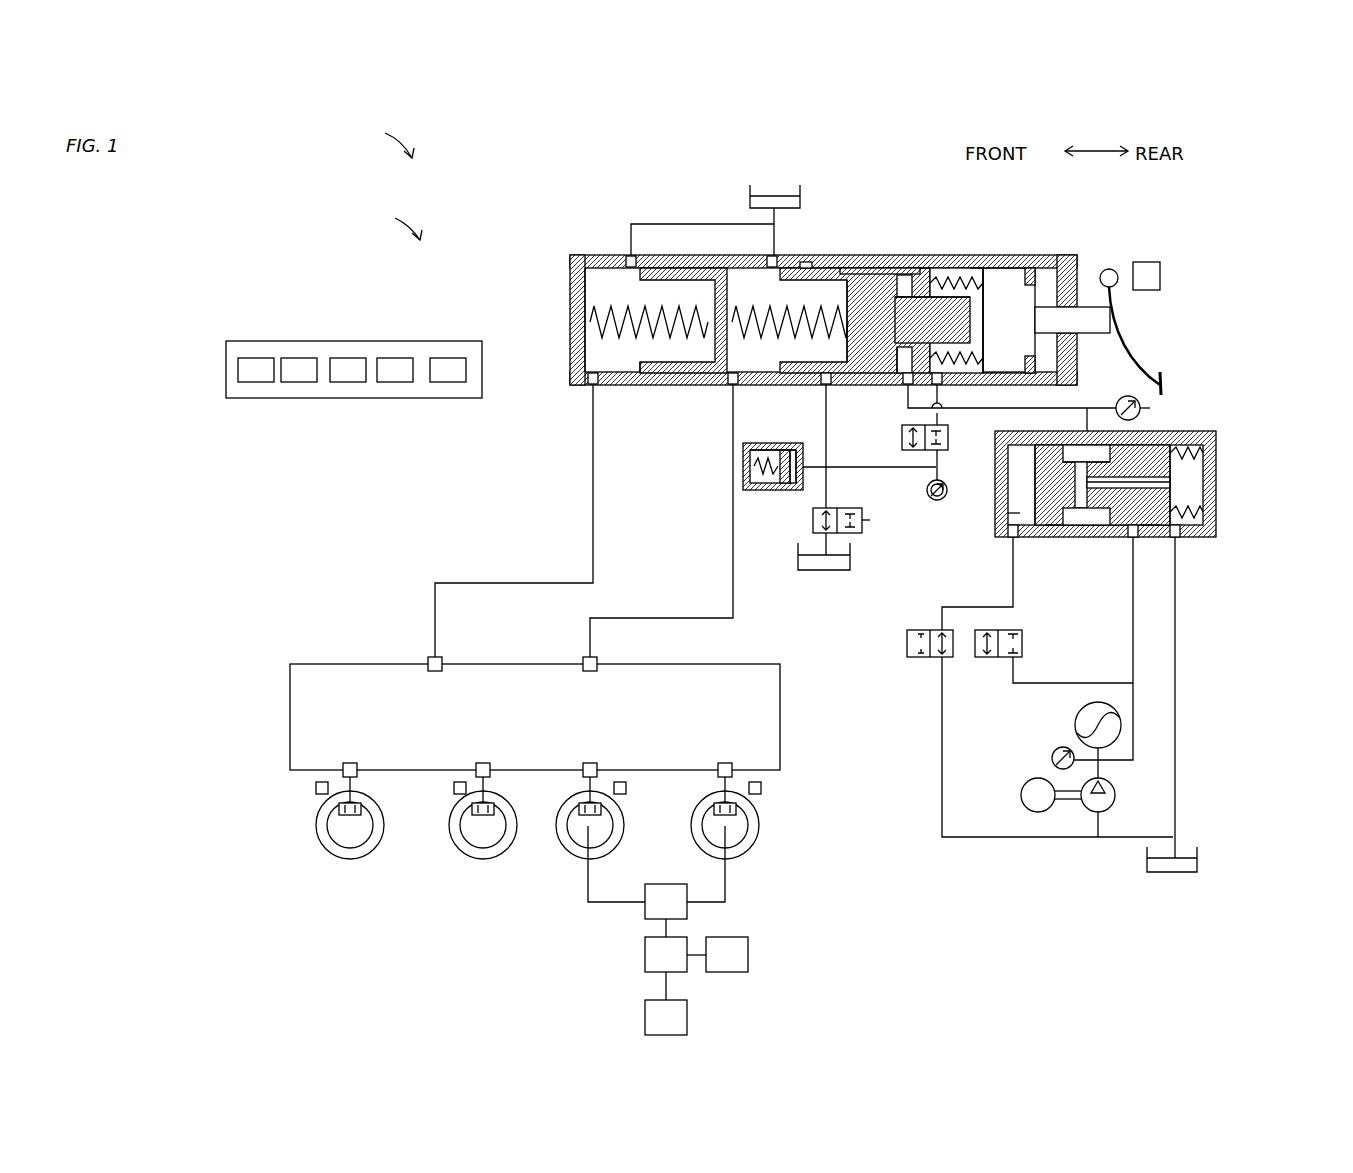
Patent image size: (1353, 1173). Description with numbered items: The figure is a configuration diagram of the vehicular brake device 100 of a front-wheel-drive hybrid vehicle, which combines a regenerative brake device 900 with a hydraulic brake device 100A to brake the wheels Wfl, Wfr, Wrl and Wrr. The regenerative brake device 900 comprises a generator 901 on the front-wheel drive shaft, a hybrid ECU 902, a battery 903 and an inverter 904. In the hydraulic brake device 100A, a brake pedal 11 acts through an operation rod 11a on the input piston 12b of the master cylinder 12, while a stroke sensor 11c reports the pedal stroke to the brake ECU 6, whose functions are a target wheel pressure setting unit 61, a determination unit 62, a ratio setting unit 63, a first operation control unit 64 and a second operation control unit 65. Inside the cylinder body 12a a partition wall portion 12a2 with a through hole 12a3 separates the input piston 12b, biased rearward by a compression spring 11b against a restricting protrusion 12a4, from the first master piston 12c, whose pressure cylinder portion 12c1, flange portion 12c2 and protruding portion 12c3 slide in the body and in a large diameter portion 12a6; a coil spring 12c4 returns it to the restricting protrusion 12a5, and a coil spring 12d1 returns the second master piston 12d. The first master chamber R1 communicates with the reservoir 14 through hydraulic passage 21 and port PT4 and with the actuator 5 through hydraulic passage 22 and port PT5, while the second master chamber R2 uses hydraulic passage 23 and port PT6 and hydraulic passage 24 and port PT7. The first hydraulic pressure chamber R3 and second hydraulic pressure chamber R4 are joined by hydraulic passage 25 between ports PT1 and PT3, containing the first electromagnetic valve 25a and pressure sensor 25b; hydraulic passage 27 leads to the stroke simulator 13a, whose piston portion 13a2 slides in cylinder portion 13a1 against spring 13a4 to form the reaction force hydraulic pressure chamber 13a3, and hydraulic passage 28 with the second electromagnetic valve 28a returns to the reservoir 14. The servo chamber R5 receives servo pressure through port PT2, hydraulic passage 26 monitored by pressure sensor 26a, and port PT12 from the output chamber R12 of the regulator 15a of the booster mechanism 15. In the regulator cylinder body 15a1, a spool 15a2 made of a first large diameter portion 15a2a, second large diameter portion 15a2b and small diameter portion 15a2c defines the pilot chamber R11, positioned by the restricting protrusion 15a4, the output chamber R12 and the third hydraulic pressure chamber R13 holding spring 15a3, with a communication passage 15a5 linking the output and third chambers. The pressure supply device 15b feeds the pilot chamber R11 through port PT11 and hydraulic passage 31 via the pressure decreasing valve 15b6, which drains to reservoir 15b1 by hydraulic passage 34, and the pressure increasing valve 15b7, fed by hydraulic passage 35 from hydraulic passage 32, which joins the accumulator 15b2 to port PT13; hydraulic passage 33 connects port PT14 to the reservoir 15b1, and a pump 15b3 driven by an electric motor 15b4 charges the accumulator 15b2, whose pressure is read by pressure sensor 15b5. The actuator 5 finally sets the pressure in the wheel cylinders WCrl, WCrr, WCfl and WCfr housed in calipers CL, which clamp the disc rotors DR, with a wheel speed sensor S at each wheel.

The vehicular brake device 100 is at (364, 140).
The hydraulic brake device 100A is at (370, 225).
The brake ECU 6 is at (305, 341).
The target wheel pressure setting unit 61 is at (246, 378).
The determination unit 62 is at (303, 378).
The ratio setting unit 63 is at (346, 378).
The first operation control unit 64 is at (397, 378).
The second operation control unit 65 is at (452, 378).
The master cylinder 12 is at (568, 258).
The cylinder body 12a is at (585, 315).
The partition wall portion 12a2 is at (922, 268).
The through hole 12a3 is at (936, 268).
The restricting protrusion 12a4 is at (1030, 268).
The restricting protrusion 12a5 is at (908, 262).
The large diameter portion 12a6 is at (855, 268).
The input piston 12b is at (1008, 280).
The first master piston 12c is at (788, 374).
The pressure cylinder portion 12c1 is at (806, 262).
The flange portion 12c2 is at (882, 262).
The protruding portion 12c3 is at (985, 262).
The coil spring 12c4 is at (782, 446).
The second master piston 12d is at (672, 362).
The coil spring 12d1 is at (648, 385).
The brake pedal 11 is at (1128, 355).
The operation rod 11a is at (1112, 320).
The compression spring 11b is at (955, 280).
The stroke sensor 11c is at (1145, 262).
The reservoir 14 is at (749, 203).
The hydraulic passage 21 is at (772, 224).
The hydraulic passage 22 is at (670, 618).
The hydraulic passage 23 is at (660, 224).
The hydraulic passage 24 is at (500, 583).
The actuator 5 is at (745, 664).
The stroke simulator 13a is at (768, 497).
The cylinder portion 13a1 is at (776, 474).
The piston portion 13a2 is at (785, 484).
The reaction force hydraulic pressure chamber 13a3 is at (752, 452).
The spring 13a4 is at (758, 466).
The hydraulic passage 25 is at (923, 477).
The first electromagnetic valve 25a is at (948, 440).
The pressure sensor 25b is at (947, 490).
The hydraulic passage 26 is at (1112, 400).
The pressure sensor 26a is at (1141, 408).
The hydraulic passage 27 is at (816, 468).
The hydraulic passage 28 is at (836, 508).
The second electromagnetic valve 28a is at (862, 528).
The booster mechanism 15 is at (1268, 620).
The regulator 15a is at (1290, 496).
The cylinder body 15a1 is at (1216, 499).
The spool 15a2 is at (1216, 450).
The first large diameter portion 15a2a is at (1150, 540).
The second large diameter portion 15a2b is at (1046, 540).
The small diameter portion 15a2c is at (1093, 540).
The spring 15a3 is at (1195, 432).
The restricting protrusion 15a4 is at (1012, 545).
The communication passage 15a5 is at (1185, 474).
The pressure supply device 15b is at (1197, 706).
The reservoir 15b1 is at (1198, 858).
The accumulator 15b2 is at (1075, 725).
The pump 15b3 is at (1115, 793).
The electric motor 15b4 is at (1021, 795).
The pressure sensor 15b5 is at (1052, 758).
The pressure decreasing valve 15b6 is at (924, 658).
The pressure increasing valve 15b7 is at (992, 658).
The hydraulic passage 31 is at (1010, 607).
The hydraulic passage 32 is at (1135, 662).
The hydraulic passage 33 is at (1177, 766).
The hydraulic passage 34 is at (940, 742).
The hydraulic passage 35 is at (1065, 683).
The regenerative brake device 900 is at (522, 965).
The generator 901 is at (650, 905).
The hybrid ECU 902 is at (728, 958).
The battery 903 is at (655, 1012).
The inverter 904 is at (655, 958).
The port PT1 is at (940, 386).
The port PT2 is at (907, 386).
The port PT3 is at (826, 386).
The port PT4 is at (770, 256).
The port PT5 is at (733, 385).
The port PT6 is at (628, 256).
The port PT7 is at (592, 385).
The port PT11 is at (1010, 538).
The port PT12 is at (1085, 432).
The port PT13 is at (1160, 560).
The port PT14 is at (1178, 538).
The first master chamber R1 is at (756, 362).
The second master chamber R2 is at (628, 372).
The first hydraulic pressure chamber R3 is at (1008, 339).
The second hydraulic pressure chamber R4 is at (852, 378).
The servo chamber R5 is at (900, 378).
The pilot chamber R11 is at (1000, 512).
The output chamber R12 is at (1094, 512).
The third hydraulic pressure chamber R13 is at (1210, 508).
The wheel speed sensor S is at (315, 788).
The caliper CL is at (337, 808).
The disc rotor DR is at (330, 830).
The wheel cylinder WCrl is at (318, 822).
The wheel cylinder WCrr is at (452, 822).
The wheel cylinder WCfl is at (622, 822).
The wheel cylinder WCfr is at (757, 822).
The wheel Wrl is at (336, 852).
The wheel Wrr is at (470, 852).
The wheel Wfl is at (604, 852).
The wheel Wfr is at (742, 852).